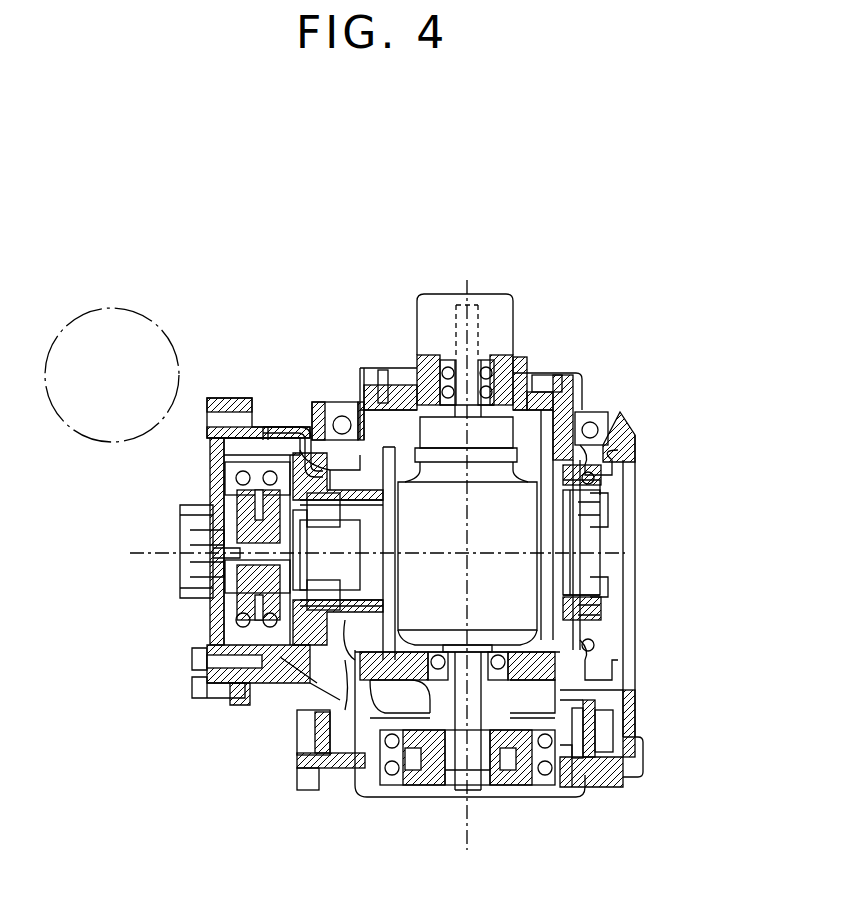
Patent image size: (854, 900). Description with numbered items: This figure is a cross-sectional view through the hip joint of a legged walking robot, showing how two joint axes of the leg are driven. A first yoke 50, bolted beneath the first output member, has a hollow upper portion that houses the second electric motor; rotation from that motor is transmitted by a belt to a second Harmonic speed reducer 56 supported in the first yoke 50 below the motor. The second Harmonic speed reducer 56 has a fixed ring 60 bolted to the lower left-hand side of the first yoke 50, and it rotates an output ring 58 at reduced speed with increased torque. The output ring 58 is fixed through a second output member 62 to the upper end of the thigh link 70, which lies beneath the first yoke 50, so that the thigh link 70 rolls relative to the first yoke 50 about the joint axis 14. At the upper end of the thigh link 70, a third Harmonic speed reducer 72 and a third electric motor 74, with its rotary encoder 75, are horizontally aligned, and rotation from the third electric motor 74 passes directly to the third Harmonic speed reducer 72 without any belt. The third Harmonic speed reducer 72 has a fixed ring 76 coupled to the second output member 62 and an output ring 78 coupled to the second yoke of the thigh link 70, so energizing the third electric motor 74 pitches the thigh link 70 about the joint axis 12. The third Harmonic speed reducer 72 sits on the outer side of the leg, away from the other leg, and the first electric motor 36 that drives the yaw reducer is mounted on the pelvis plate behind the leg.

The joint axis 12 is at (470, 840).
The joint axis 14 is at (152, 553).
The first electric motor 36 is at (165, 325).
The first yoke 50 is at (290, 424).
The second Harmonic speed reducer 56 is at (237, 597).
The output ring 58 is at (269, 435).
The fixed ring 60 is at (213, 460).
The second output member 62 is at (603, 600).
The thigh link 70 is at (615, 412).
The third Harmonic speed reducer 72 is at (443, 753).
The third electric motor 74 is at (496, 518).
The rotary encoder 75 is at (503, 313).
The fixed ring 76 is at (588, 778).
The output ring 78 is at (612, 767).